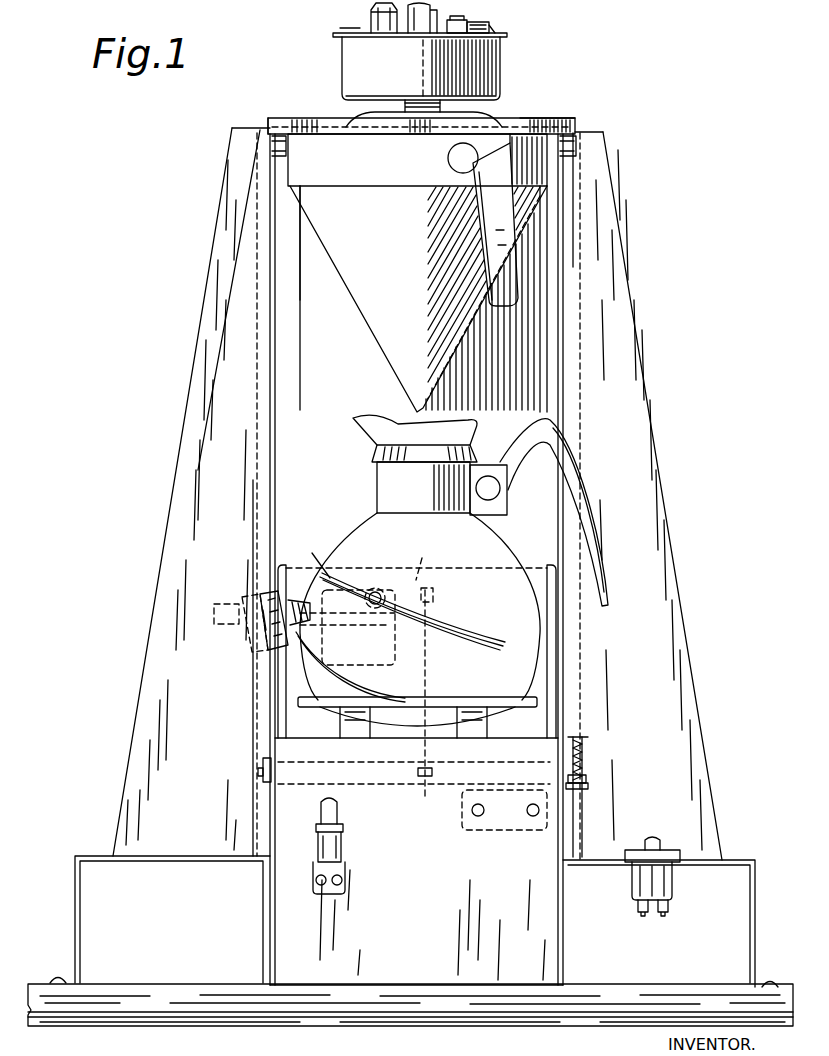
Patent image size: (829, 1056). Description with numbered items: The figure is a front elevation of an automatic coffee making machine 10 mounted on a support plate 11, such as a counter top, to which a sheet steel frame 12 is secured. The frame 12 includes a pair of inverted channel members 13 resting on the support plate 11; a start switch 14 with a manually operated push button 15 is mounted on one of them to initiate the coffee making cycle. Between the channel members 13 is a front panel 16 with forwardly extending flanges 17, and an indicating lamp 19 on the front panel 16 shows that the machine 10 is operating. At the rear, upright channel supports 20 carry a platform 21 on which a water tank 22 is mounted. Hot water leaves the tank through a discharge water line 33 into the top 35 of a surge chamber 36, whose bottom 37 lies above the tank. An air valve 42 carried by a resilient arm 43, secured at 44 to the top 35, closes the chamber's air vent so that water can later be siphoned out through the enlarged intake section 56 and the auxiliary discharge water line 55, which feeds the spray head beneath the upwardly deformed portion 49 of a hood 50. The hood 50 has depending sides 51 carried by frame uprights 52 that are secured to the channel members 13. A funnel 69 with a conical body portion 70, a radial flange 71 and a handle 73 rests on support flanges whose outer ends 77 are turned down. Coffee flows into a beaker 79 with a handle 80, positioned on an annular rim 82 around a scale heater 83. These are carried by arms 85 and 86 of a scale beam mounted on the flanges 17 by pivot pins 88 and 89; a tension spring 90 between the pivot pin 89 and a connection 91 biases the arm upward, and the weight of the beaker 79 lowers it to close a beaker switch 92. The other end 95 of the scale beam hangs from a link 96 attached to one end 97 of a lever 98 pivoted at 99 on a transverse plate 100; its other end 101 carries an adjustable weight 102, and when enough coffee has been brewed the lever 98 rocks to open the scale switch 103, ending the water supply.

The automatic coffee making machine 10 is at (685, 104).
The support plate 11 is at (168, 1030).
The frame 12 is at (199, 217).
The inverted channel members 13 is at (96, 855).
The start switch 14 is at (672, 890).
The push button 15 is at (654, 838).
The front panel 16 is at (452, 910).
The flanges 17 is at (276, 935).
The indicating lamp 19 is at (341, 812).
The upright channel supports 20 is at (278, 668).
The platform 21 is at (573, 550).
The water tank 22 is at (530, 333).
The discharge water line 33 is at (343, 28).
The top of surge chamber 35 is at (506, 40).
The surge chamber 36 is at (403, 50).
The bottom of surge chamber 37 is at (438, 104).
The air valve 42 is at (456, 24).
The resilient arm 43 is at (475, 23).
The securing point of resilient arm 44 is at (492, 30).
The upwardly deformed portion of hood 49 is at (478, 116).
The hood 50 is at (578, 117).
The depending sides of hood 51 is at (268, 181).
The frame uprights 52 is at (198, 375).
The auxiliary discharge water line 55 is at (426, 8).
The enlarged intake section 56 is at (403, 20).
The funnel 69 is at (352, 325).
The conical body portion 70 is at (395, 352).
The radial flange 71 is at (270, 124).
The handle 73 is at (490, 211).
The outer ends of flanges 77 is at (290, 156).
The beaker 79 is at (362, 542).
The handle 80 is at (592, 500).
The annular rim 82 is at (508, 704).
The scale heater 83 is at (500, 732).
The arm 85 is at (264, 762).
The arm 86 is at (588, 787).
The pivot pin 88 is at (258, 771).
The pivot pin 89 is at (586, 774).
The tension spring 90 is at (584, 745).
The connection 91 is at (584, 728).
The beaker switch 92 is at (483, 830).
The other end of scale beam 95 is at (420, 707).
The link 96 is at (428, 646).
The end of lever 97 is at (434, 598).
The lever 98 is at (420, 584).
The pivot 99 is at (374, 586).
The transverse plate 100 is at (316, 555).
The other end of lever 101 is at (214, 614).
The adjustable weight 102 is at (246, 598).
The scale switch 103 is at (360, 668).